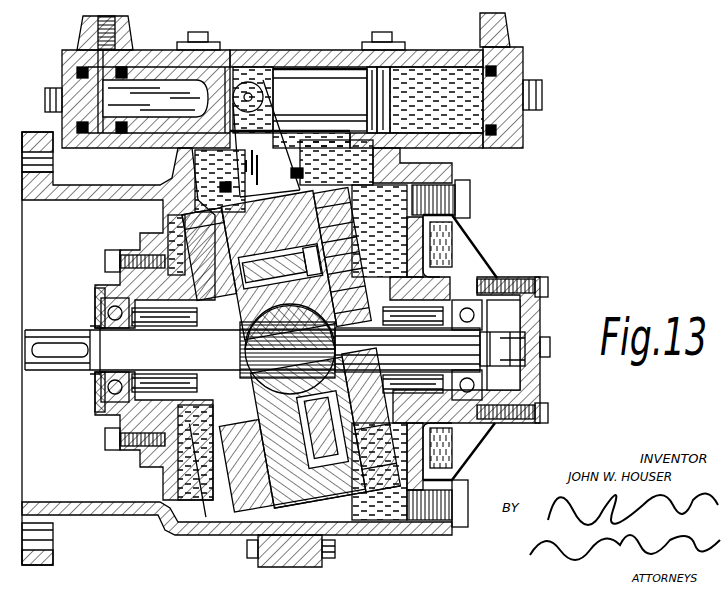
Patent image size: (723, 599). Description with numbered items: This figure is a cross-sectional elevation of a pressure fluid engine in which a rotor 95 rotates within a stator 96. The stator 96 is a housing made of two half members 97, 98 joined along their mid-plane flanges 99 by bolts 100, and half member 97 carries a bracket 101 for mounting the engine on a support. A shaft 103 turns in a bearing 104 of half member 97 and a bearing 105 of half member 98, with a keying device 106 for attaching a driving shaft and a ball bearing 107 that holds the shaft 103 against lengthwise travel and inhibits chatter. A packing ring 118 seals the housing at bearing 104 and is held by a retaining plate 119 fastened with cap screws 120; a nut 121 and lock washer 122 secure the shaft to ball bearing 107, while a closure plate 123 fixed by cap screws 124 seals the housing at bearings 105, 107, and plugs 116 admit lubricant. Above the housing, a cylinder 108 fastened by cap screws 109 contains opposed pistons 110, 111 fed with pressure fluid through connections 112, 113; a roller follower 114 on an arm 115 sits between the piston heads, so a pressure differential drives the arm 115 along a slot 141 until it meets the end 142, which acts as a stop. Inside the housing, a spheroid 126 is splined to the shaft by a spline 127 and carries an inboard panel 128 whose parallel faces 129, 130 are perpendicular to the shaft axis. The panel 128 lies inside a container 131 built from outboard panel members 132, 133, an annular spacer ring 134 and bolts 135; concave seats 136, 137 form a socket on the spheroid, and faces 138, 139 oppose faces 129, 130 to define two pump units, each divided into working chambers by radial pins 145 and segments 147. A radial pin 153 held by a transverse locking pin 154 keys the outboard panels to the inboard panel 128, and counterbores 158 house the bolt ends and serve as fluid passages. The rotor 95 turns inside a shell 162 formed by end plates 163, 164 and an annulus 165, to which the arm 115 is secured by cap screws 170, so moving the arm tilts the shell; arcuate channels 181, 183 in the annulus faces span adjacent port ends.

The rotor 95 is at (314, 496).
The stator 96 is at (124, 531).
The half member 97 is at (165, 185).
The half member 98 is at (390, 143).
The mid-plane flanges 99 is at (300, 567).
The bolts 100 is at (340, 550).
The bracket 101 is at (72, 205).
The shaft 103 is at (85, 372).
The bearing 104 is at (163, 370).
The bearing 105 is at (420, 320).
The keying device 106 is at (58, 360).
The ball bearing 107 is at (467, 297).
The cylinder 108 is at (520, 140).
The cap screws 109 is at (200, 32).
The piston 110 is at (170, 62).
The piston 111 is at (318, 75).
The connection 112 is at (88, 26).
The connection 113 is at (505, 25).
The roller follower 114 is at (262, 75).
The arm 115 is at (272, 120).
The plugs 116 is at (472, 190).
The packing ring 118 is at (98, 312).
The retaining plate 119 is at (102, 285).
The cap screws 120 is at (110, 250).
The nut 121 is at (528, 318).
The lock washer 122 is at (513, 278).
The closure plate 123 is at (538, 380).
The cap screws 124 is at (548, 412).
The spheroid 126 is at (344, 285).
The spline 127 is at (347, 303).
The panel 128 is at (338, 261).
The face 129 is at (328, 215).
The face 130 is at (334, 245).
The container 131 is at (278, 252).
The outboard panel member 132 is at (272, 162).
The outboard panel member 133 is at (351, 340).
The annular spacer ring 134 is at (300, 250).
The bolts 135 is at (300, 197).
The seat 136 is at (255, 318).
The seat 137 is at (246, 340).
The face 138 is at (245, 300).
The face 139 is at (332, 230).
The slot 141 is at (306, 119).
The end of slot 142 is at (262, 136).
The radial pin 145 is at (340, 356).
The segment 147 is at (368, 376).
The radial pin 153 is at (318, 440).
The transverse locking pin 154 is at (308, 432).
The counterbore 158 is at (225, 250).
The shell 162 is at (232, 487).
The end plate 163 is at (222, 449).
The end plate 164 is at (470, 436).
The annulus 165 is at (300, 505).
The cap screws 170 is at (219, 188).
The arcuate channel 181 is at (215, 218).
The arcuate channel 183 is at (383, 445).